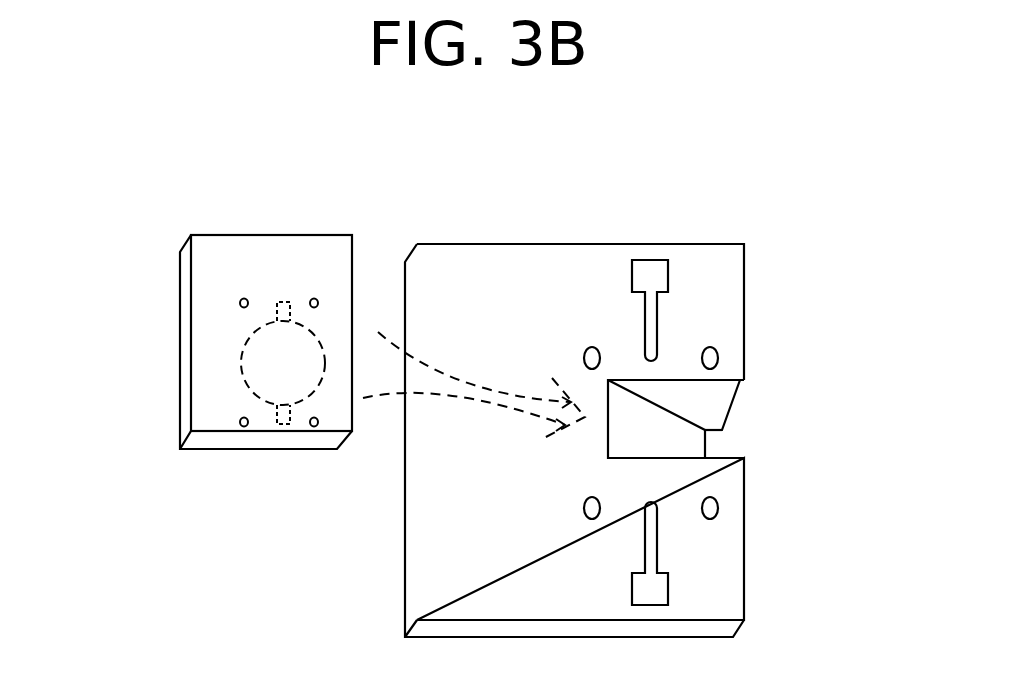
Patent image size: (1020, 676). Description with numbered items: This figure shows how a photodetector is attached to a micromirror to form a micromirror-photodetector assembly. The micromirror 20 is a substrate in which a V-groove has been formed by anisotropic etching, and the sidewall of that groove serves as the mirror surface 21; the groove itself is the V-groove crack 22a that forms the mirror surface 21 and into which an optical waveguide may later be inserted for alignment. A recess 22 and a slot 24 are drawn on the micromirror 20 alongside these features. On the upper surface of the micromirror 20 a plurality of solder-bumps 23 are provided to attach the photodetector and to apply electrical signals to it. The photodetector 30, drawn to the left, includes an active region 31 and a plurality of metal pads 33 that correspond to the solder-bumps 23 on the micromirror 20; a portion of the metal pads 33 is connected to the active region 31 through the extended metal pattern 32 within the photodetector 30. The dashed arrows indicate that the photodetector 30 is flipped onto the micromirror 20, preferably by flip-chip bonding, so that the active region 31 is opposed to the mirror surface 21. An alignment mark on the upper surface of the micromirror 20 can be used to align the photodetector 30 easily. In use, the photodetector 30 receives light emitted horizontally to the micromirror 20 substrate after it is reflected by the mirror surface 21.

The micromirror 20 is at (408, 250).
The mirror surface 21 is at (640, 438).
The recess 22 is at (607, 435).
The V-groove crack 22a is at (717, 447).
The solder-bumps 23 is at (723, 340).
The T-shaped slot 24 is at (633, 330).
The photodetector 30 is at (215, 233).
The active region 31 is at (257, 377).
The extended metal pattern 32 is at (282, 414).
The metal pads 33 is at (240, 304).